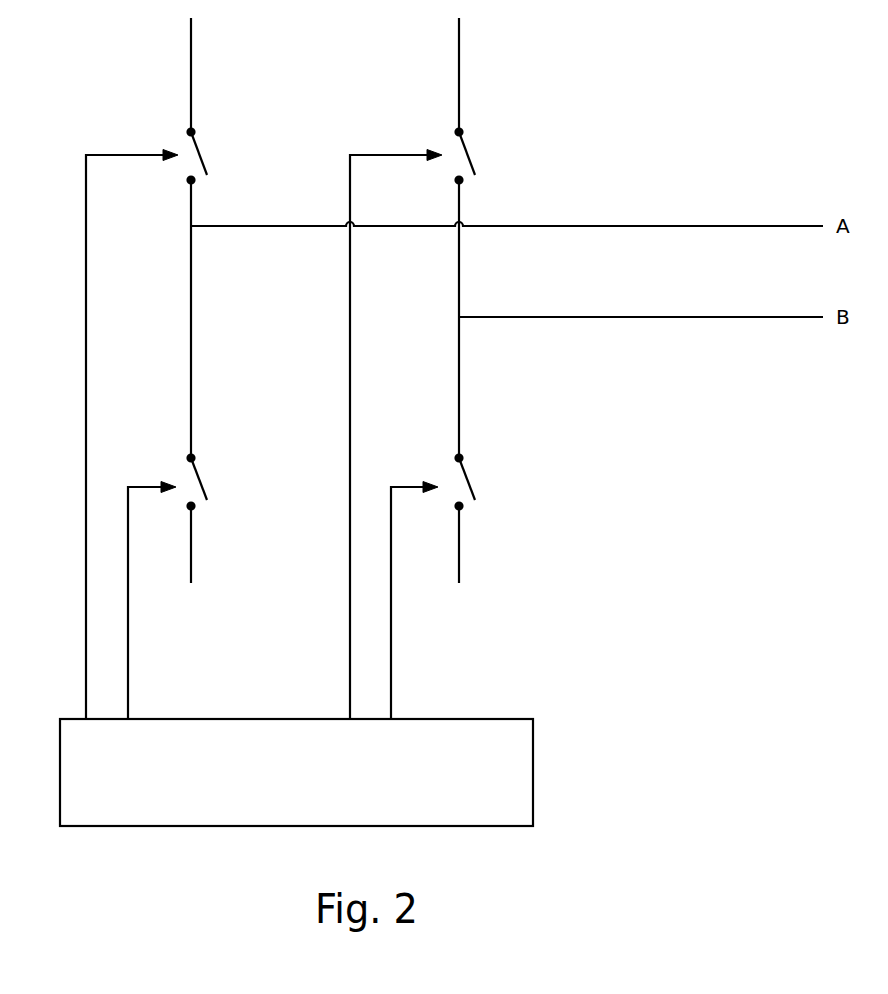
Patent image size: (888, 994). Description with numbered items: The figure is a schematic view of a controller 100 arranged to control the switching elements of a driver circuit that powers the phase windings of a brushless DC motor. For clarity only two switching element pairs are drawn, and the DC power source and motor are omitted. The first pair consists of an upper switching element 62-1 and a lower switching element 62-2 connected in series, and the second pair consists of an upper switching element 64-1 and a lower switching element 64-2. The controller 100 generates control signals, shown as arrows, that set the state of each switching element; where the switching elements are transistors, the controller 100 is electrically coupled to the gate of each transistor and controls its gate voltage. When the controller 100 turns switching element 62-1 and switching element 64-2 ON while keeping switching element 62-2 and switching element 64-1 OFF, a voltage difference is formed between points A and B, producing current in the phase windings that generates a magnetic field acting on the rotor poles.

The switching element 62-1 is at (198, 153).
The switching element 62-2 is at (200, 480).
The switching element 64-1 is at (466, 153).
The switching element 64-2 is at (466, 480).
The controller 100 is at (518, 718).